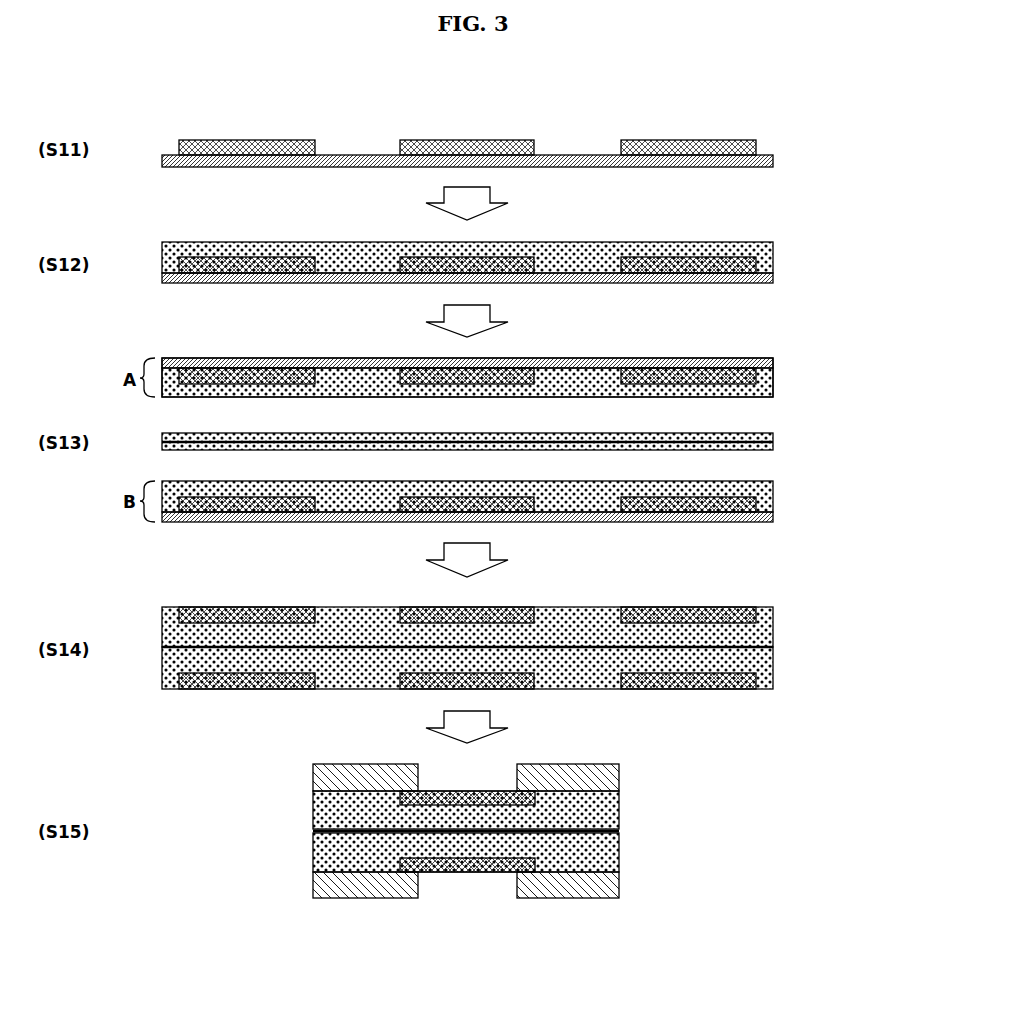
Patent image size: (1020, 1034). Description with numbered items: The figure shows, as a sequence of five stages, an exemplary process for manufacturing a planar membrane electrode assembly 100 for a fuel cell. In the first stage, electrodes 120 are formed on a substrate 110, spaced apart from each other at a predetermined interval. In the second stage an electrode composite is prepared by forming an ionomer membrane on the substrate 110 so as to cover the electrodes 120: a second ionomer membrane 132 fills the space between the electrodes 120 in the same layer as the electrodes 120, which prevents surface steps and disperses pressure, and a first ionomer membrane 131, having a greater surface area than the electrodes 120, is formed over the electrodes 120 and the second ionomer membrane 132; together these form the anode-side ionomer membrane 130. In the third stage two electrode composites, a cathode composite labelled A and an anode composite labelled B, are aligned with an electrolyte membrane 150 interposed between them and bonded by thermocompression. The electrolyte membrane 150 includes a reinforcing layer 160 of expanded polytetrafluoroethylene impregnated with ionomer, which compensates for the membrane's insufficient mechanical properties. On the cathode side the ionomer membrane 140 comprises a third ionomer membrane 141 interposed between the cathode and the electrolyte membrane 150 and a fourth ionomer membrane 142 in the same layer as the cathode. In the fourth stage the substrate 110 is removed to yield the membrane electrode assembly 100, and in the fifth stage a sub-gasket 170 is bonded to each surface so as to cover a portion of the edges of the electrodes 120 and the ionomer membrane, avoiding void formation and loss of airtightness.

The membrane electrode assembly 100 is at (744, 333).
The substrate 110 is at (562, 156).
The electrode 120 is at (683, 142).
The ionomer membrane (anode side) 130 is at (855, 222).
The first ionomer membrane 131 is at (765, 246).
The second ionomer membrane 132 is at (768, 264).
The ionomer membrane (cathode side) 140 is at (862, 368).
The third ionomer membrane 141 is at (768, 392).
The fourth ionomer membrane 142 is at (768, 377).
The electrolyte membrane 150 is at (770, 434).
The reinforcing layer 160 is at (770, 442).
The sub-gasket 170 is at (605, 782).